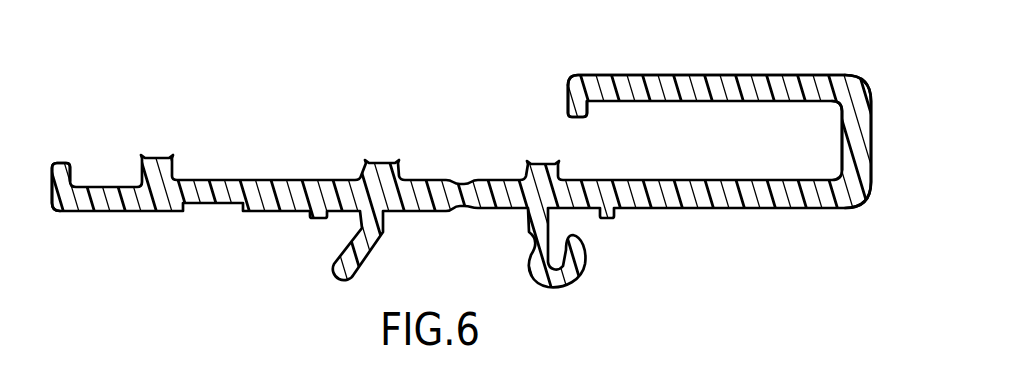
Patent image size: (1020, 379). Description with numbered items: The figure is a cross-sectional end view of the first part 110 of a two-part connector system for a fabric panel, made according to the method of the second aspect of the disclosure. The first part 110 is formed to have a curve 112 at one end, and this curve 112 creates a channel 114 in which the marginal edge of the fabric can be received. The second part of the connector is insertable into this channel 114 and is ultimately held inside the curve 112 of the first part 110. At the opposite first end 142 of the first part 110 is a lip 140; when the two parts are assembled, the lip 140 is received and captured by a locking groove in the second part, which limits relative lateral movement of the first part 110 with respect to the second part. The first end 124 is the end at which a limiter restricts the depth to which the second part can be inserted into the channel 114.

The first part 110 is at (216, 99).
The curve 112 is at (872, 130).
The channel 114 is at (723, 150).
The first end 124 is at (52, 195).
The lip 140 is at (572, 118).
The first end 142 is at (576, 74).